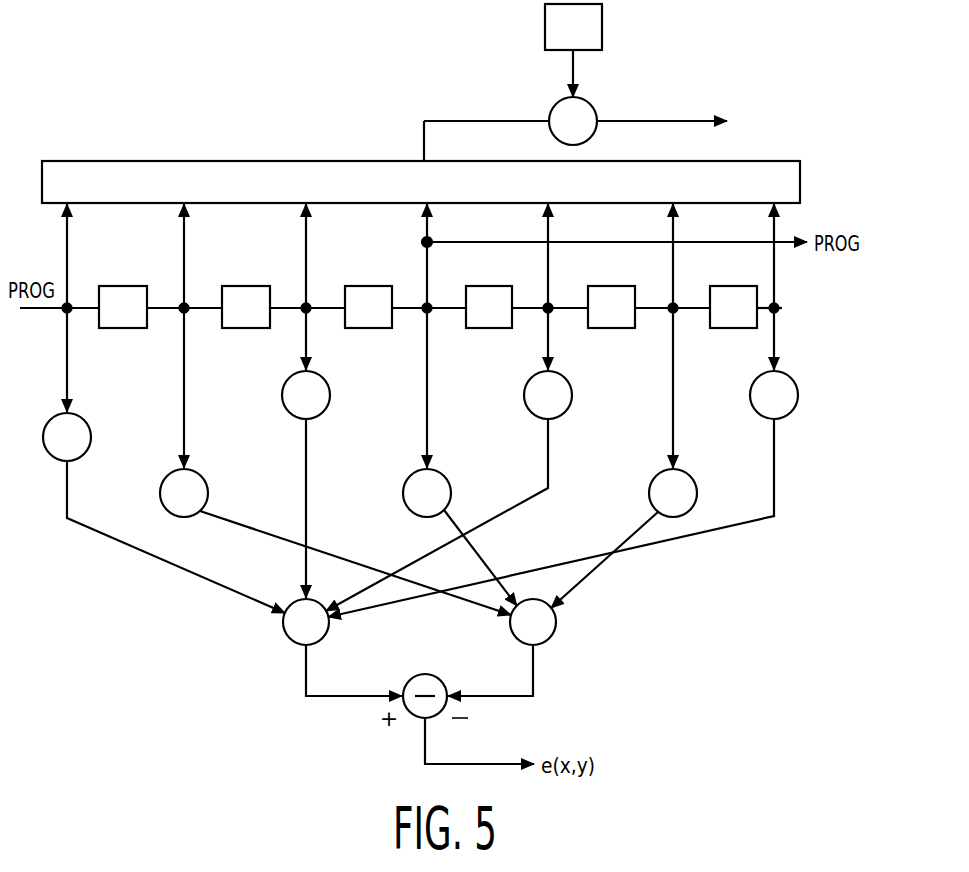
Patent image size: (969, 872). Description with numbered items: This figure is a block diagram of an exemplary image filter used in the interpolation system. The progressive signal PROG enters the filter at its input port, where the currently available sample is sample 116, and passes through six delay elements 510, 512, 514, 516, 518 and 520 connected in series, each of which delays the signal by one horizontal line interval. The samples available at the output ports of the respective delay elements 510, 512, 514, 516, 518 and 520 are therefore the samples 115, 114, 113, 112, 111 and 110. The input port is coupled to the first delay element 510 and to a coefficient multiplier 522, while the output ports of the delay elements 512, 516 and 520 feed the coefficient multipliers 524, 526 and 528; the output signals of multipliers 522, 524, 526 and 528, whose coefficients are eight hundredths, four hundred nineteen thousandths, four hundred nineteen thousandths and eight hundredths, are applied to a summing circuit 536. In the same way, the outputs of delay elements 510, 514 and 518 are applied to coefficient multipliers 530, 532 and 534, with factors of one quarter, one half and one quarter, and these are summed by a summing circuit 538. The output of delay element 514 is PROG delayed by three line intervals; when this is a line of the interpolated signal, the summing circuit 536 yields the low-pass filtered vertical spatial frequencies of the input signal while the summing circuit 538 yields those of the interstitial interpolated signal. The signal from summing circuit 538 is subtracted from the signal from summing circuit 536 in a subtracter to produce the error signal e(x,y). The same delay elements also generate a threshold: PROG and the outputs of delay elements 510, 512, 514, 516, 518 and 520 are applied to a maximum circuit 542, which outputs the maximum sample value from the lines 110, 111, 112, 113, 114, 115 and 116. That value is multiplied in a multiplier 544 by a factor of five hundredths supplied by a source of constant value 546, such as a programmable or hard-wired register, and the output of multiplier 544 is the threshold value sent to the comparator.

The sample 110 is at (782, 308).
The sample 111 is at (669, 302).
The sample 112 is at (546, 302).
The sample 113 is at (423, 302).
The sample 114 is at (308, 304).
The sample 115 is at (187, 304).
The sample 116 is at (62, 314).
The delay element 510 is at (124, 330).
The delay element 512 is at (247, 330).
The delay element 514 is at (369, 330).
The delay element 516 is at (490, 330).
The delay element 518 is at (612, 330).
The delay element 520 is at (734, 330).
The coefficient multiplier 522 is at (92, 437).
The coefficient multiplier 524 is at (328, 406).
The coefficient multiplier 526 is at (568, 408).
The coefficient multiplier 528 is at (799, 396).
The coefficient multiplier 530 is at (209, 493).
The coefficient multiplier 532 is at (402, 492).
The coefficient multiplier 534 is at (648, 492).
The summing circuit 536 is at (330, 630).
The summing circuit 538 is at (557, 628).
The maximum circuit 542 is at (121, 160).
The multiplier 544 is at (594, 110).
The source of constant value 546 is at (545, 30).